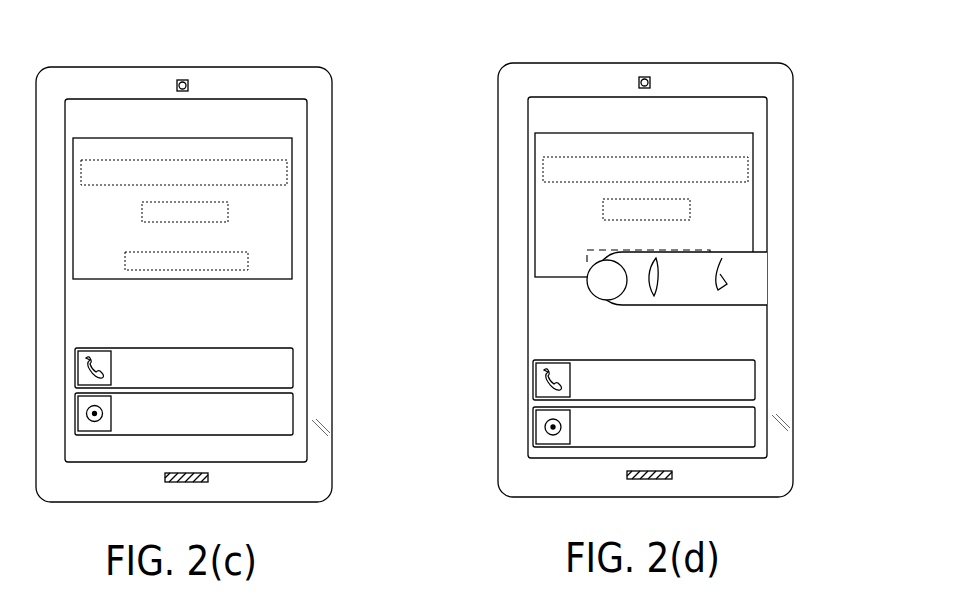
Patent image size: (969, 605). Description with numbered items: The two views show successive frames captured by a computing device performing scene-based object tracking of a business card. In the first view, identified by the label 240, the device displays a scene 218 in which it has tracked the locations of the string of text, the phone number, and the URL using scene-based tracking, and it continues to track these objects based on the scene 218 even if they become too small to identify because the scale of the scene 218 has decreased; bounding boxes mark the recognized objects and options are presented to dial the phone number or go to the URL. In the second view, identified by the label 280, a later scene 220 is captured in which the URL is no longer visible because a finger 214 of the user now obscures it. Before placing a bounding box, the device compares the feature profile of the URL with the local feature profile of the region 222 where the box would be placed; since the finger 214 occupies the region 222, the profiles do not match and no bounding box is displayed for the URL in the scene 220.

The user interface display 240 is at (363, 100).
The user interface display 280 is at (810, 77).
The user finger / hand 214 is at (747, 275).
The action buttons 218 is at (285, 327).
The action buttons 220 is at (748, 335).
The touch selection 222 is at (594, 263).